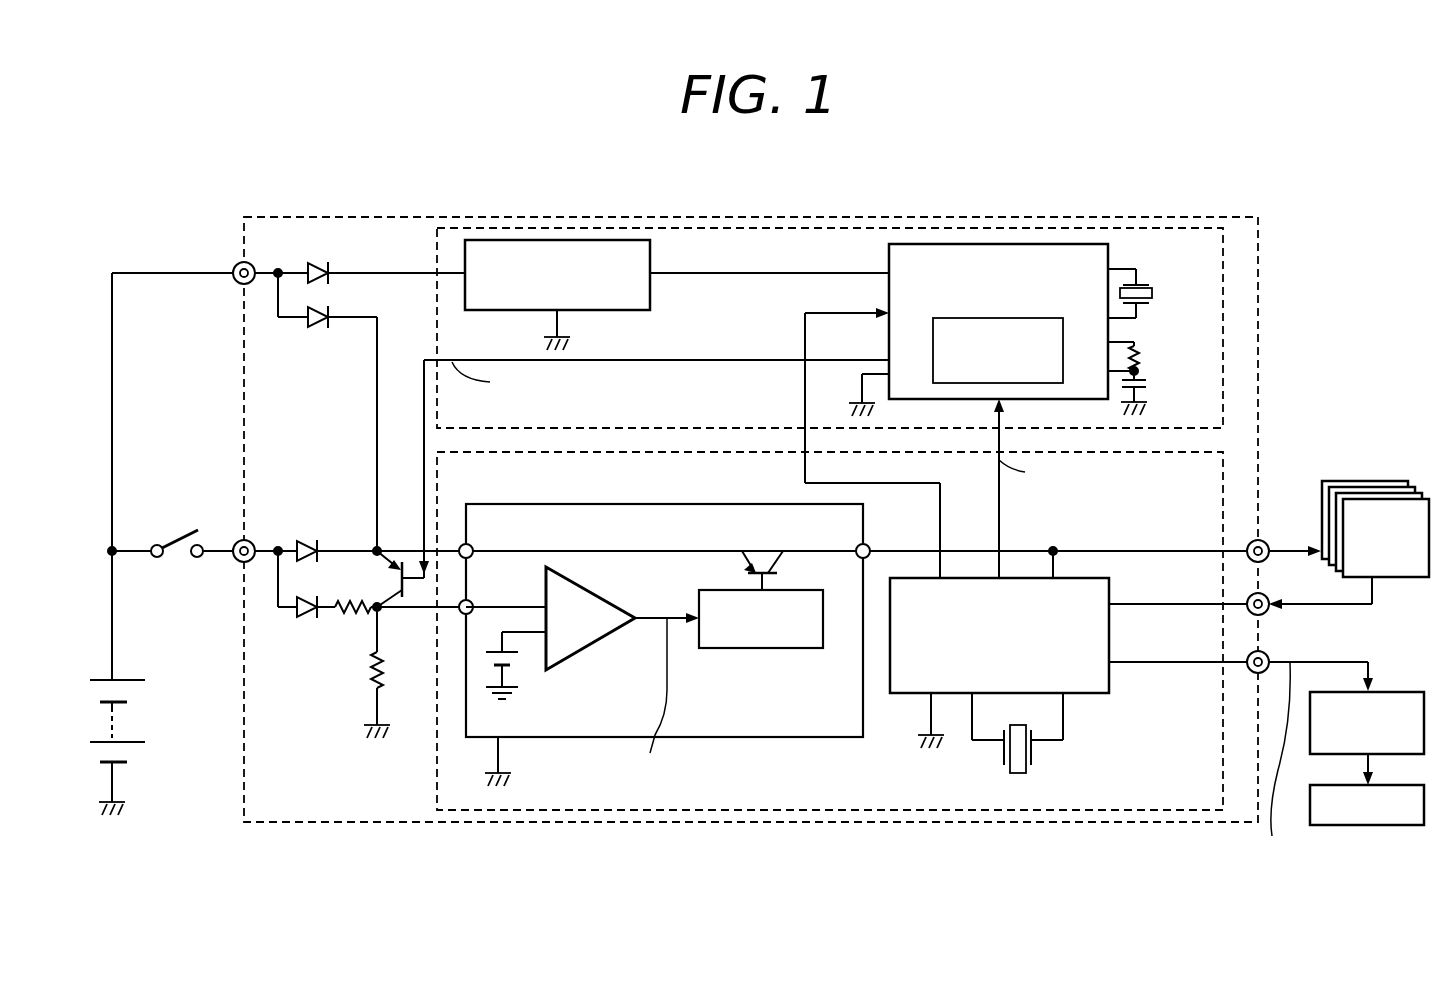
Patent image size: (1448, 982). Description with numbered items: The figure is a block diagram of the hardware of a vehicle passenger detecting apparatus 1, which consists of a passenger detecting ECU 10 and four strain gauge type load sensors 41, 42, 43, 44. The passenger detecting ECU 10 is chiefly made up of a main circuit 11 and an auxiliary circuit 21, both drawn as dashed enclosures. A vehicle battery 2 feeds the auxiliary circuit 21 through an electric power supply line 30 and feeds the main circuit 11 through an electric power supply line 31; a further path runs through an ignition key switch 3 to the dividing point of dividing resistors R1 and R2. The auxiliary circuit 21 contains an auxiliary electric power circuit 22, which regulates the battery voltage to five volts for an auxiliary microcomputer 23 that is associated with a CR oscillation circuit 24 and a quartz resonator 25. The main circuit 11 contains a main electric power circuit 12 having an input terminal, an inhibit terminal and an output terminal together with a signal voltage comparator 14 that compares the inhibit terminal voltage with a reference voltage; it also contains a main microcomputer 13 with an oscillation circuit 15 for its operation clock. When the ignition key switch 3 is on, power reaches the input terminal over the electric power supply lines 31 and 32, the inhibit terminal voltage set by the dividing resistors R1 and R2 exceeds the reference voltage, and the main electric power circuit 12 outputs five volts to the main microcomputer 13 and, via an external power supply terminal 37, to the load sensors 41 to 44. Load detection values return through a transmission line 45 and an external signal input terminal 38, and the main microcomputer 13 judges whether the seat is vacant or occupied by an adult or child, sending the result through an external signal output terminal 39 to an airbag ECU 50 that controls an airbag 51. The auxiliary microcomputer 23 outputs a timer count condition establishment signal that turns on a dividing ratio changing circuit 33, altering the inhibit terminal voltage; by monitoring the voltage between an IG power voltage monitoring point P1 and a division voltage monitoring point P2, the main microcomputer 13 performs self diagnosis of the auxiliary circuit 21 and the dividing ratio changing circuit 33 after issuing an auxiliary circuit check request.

The vehicle passenger detecting apparatus 1 is at (720, 192).
The vehicle battery 2 is at (130, 680).
The ignition key switch 3 is at (178, 535).
The passenger detecting ECU 10 is at (420, 217).
The main circuit 11 is at (437, 770).
The main electric power circuit 12 is at (684, 656).
The main microcomputer 13 is at (1110, 680).
The signal voltage comparator 14 is at (600, 596).
The oscillation circuit 15 is at (1033, 755).
The auxiliary circuit 21 is at (435, 318).
The auxiliary electric power circuit 22 is at (650, 291).
The auxiliary microcomputer 23 is at (889, 258).
The CR oscillation circuit 24 is at (1155, 372).
The quartz resonator 25 is at (1152, 291).
The electric power supply line 30 is at (370, 272).
The electric power supply line 31 is at (377, 393).
The electric power supply line 32 is at (347, 549).
The dividing ratio changing circuit 33 is at (402, 526).
The external power supply terminal 37 is at (1268, 538).
The external signal input terminal 38 is at (1270, 610).
The external signal output terminal 39 is at (1270, 652).
The strain gauge type load sensor 41 is at (1365, 520).
The strain gauge type load sensor 42 is at (1372, 526).
The strain gauge type load sensor 43 is at (1379, 532).
The strain gauge type load sensor 44 is at (1386, 538).
The transmission line 45 is at (1372, 590).
The airbag ECU 50 is at (1390, 690).
The airbag 51 is at (1390, 826).
The dividing resistor R1 is at (363, 605).
The dividing resistor R2 is at (370, 680).
The IG power voltage monitoring point P1 is at (328, 618).
The division voltage monitoring point P2 is at (413, 618).